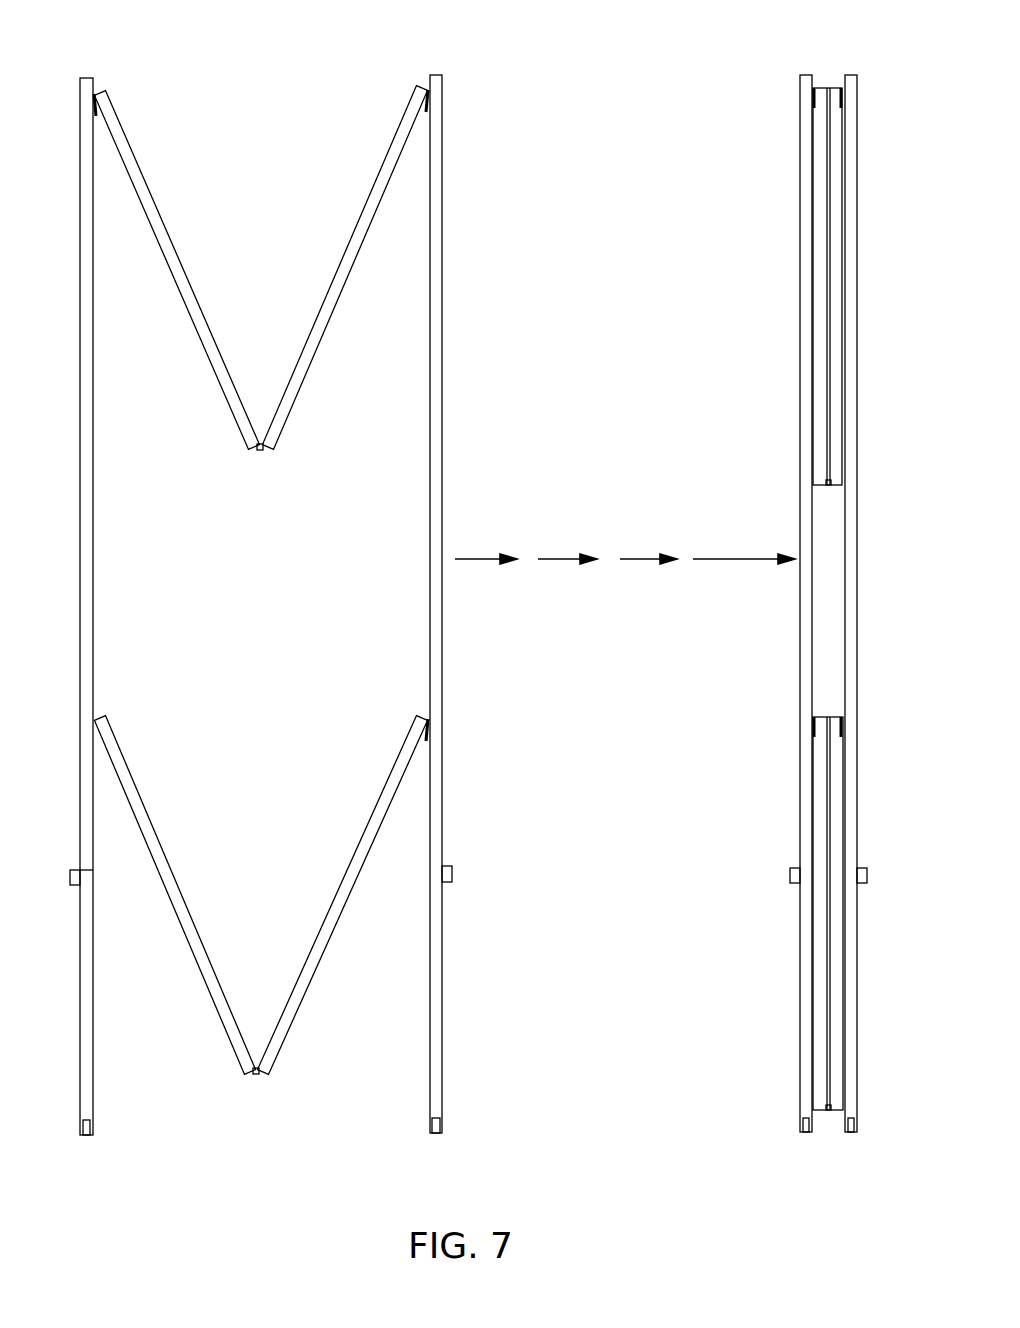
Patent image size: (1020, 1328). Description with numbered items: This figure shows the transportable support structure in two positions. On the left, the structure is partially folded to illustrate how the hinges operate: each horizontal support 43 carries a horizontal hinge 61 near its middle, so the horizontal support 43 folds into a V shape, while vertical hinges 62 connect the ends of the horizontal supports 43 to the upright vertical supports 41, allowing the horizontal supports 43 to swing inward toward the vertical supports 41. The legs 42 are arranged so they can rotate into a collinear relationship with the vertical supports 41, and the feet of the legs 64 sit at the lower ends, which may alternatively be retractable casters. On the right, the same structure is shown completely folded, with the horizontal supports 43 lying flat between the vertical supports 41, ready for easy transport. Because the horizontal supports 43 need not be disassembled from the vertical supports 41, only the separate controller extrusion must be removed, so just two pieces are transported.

The vertical support 41 is at (443, 375).
The leg 42 is at (91, 1045).
The horizontal support 43 is at (178, 272).
The horizontal hinge 61 is at (258, 440).
The vertical hinge 62 is at (97, 90).
The foot of the leg 64 is at (93, 1137).